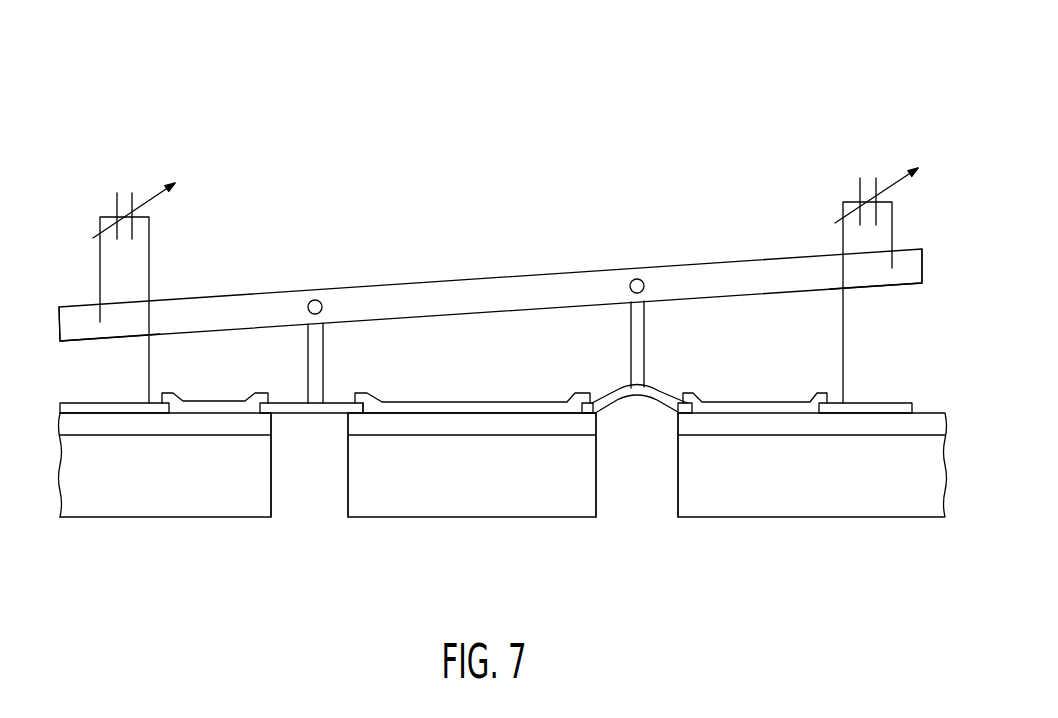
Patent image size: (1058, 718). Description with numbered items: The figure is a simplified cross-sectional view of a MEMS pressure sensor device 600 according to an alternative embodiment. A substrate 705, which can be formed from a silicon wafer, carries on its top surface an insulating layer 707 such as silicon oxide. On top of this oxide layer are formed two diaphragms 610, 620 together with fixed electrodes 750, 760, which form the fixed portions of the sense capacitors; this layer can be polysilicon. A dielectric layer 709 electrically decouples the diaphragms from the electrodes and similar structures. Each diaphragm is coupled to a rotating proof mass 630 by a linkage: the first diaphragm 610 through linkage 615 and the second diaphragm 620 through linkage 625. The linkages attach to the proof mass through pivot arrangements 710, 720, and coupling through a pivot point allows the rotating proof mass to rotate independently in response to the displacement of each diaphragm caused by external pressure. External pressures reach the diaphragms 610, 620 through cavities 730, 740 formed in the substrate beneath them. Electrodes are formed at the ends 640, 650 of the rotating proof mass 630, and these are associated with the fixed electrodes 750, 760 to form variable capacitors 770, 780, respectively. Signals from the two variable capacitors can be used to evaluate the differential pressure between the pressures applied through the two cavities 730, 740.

The MEMS pressure sensor device 600 is at (188, 42).
The diaphragm 610 is at (338, 402).
The linkage 615 is at (308, 362).
The diaphragm 620 is at (663, 395).
The linkage 625 is at (644, 328).
The rotating proof mass 630 is at (756, 270).
The end of rotating proof mass 640 is at (80, 312).
The end of rotating proof mass 650 is at (907, 278).
The substrate 705 is at (840, 505).
The insulating layer 707 is at (928, 420).
The dielectric layer 709 is at (482, 407).
The pivot arrangement 710 is at (315, 300).
The pivot arrangement 720 is at (638, 279).
The cavity 730 is at (307, 485).
The cavity 740 is at (643, 485).
The electrode 750 is at (100, 408).
The electrode 760 is at (873, 405).
The variable capacitor 770 is at (124, 188).
The variable capacitor 780 is at (866, 172).